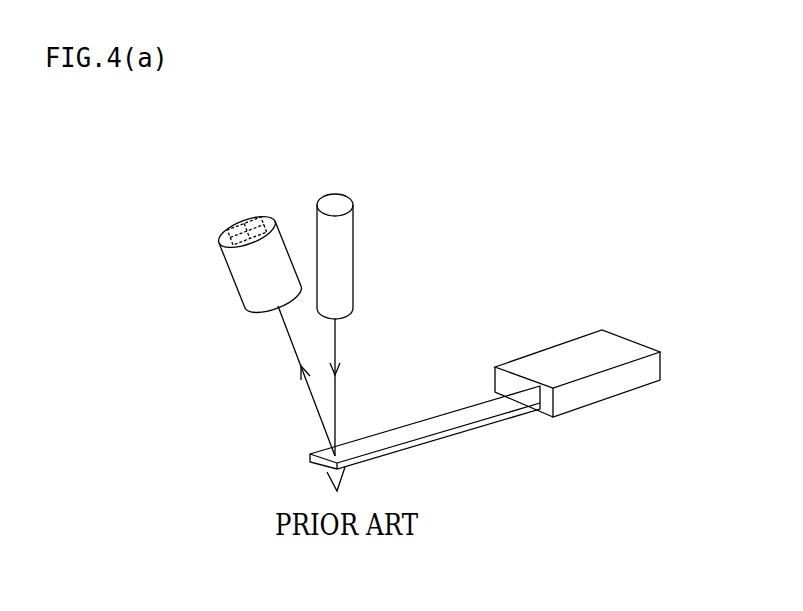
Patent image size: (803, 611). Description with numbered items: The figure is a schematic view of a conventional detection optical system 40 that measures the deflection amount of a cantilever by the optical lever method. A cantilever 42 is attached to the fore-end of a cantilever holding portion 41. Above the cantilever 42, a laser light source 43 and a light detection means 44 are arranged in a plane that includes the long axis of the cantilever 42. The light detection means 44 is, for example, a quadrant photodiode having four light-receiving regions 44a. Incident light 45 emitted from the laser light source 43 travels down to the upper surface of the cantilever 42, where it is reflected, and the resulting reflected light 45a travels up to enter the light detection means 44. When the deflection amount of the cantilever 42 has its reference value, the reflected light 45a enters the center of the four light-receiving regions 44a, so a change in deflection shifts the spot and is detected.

The detection optical system 40 is at (397, 139).
The cantilever holding portion 41 is at (608, 399).
The cantilever 42 is at (437, 439).
The laser light source 43 is at (355, 238).
The light detection means 44 is at (232, 278).
The light-receiving regions 44a is at (243, 226).
The incident light 45 is at (337, 355).
The reflected light 45a is at (293, 345).